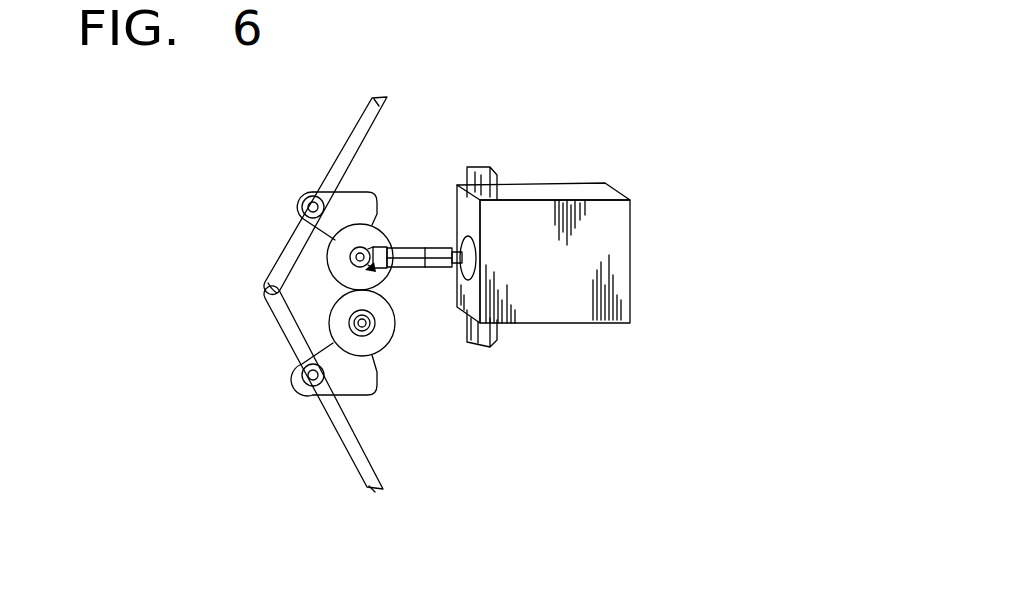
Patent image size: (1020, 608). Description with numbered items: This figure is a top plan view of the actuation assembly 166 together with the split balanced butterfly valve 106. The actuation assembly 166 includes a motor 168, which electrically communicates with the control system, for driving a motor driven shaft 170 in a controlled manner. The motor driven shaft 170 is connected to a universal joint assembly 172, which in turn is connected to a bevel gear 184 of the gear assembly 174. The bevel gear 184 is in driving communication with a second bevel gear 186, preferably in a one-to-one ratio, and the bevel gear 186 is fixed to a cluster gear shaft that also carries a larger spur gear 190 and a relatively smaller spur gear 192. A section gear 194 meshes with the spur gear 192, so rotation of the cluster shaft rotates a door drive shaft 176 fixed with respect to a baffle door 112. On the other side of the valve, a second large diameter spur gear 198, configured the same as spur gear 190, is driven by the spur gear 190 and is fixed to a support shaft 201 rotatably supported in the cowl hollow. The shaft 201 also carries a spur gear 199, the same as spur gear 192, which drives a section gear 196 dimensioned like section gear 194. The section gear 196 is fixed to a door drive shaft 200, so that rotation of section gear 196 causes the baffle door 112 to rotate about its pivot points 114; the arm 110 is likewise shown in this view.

The split balanced butterfly valve 106 is at (243, 323).
The first arm 110 is at (383, 100).
The baffle door 112 is at (377, 492).
The pivot points 114 is at (302, 207).
The actuation assembly 166 is at (562, 178).
The motor 168 is at (577, 275).
The motor driven shaft 170 is at (457, 278).
The universal joint assembly 172 is at (436, 247).
The gear assembly 174 is at (323, 283).
The door drive shaft 176 is at (300, 195).
The bevel gear 184 is at (377, 271).
The bevel gear 186 is at (380, 246).
The larger spur gear 190 is at (366, 245).
The smaller spur gear 192 is at (335, 260).
The section gear 194 is at (344, 203).
The section gear 196 is at (348, 385).
The second large diameter spur gear 198 is at (387, 318).
The spur gear 199 is at (342, 326).
The door drive shaft 200 is at (297, 388).
The support shaft 201 is at (365, 335).